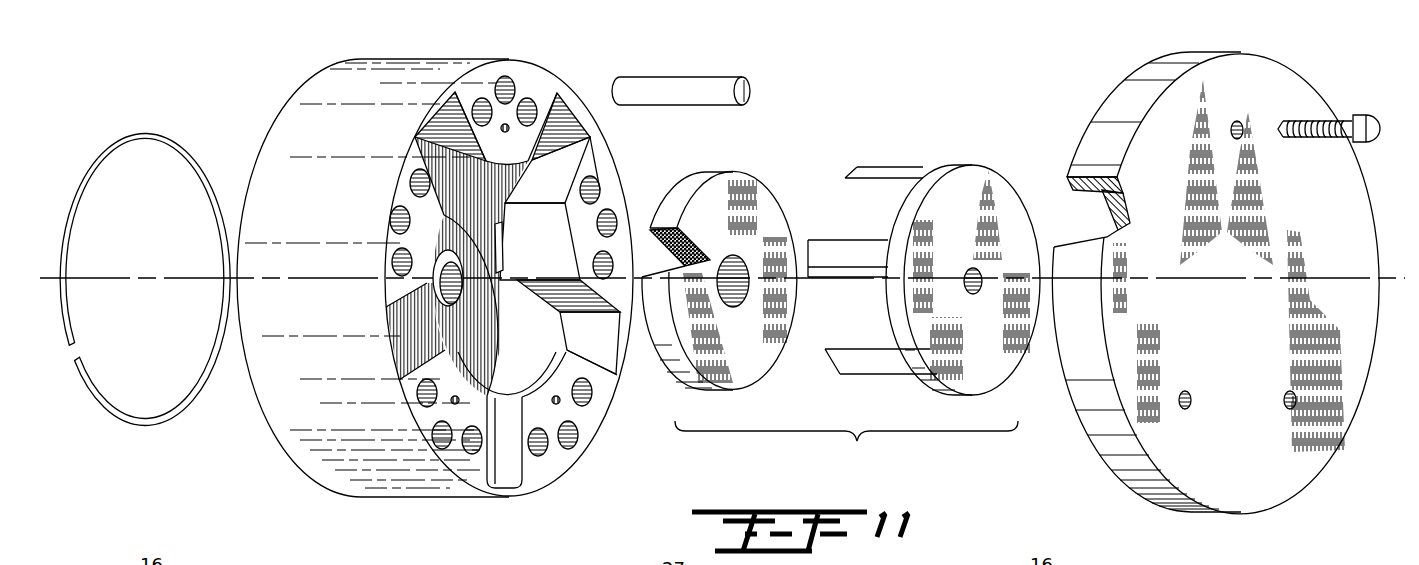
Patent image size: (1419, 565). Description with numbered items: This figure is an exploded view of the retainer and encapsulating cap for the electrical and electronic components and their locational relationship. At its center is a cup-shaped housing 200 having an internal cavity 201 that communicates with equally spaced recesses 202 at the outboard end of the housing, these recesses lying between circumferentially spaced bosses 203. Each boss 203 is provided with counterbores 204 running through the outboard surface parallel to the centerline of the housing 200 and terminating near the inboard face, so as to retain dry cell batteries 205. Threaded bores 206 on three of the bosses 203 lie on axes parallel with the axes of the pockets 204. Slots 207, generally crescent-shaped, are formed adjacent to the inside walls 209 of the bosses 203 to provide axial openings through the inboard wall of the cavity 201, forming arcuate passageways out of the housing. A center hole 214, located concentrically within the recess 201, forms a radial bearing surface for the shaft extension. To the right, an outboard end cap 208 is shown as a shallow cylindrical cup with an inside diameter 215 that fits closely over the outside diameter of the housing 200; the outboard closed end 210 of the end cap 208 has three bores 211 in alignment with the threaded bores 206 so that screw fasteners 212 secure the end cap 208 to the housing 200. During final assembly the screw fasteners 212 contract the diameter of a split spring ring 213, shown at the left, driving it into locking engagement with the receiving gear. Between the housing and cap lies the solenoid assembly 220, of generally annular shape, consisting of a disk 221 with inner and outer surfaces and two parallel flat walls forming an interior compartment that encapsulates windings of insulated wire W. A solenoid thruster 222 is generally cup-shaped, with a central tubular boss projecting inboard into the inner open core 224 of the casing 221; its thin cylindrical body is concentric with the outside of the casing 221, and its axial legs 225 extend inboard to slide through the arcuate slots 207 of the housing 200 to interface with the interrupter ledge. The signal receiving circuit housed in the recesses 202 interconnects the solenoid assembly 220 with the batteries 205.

The cup-shaped housing 200 is at (292, 465).
The internal cavity 201 is at (413, 333).
The recesses 202 is at (568, 158).
The bosses 203 is at (605, 188).
The counterbores 204 is at (511, 85).
The dry cell batteries 205 is at (748, 90).
The threaded bores 206 is at (510, 129).
The slots 207 is at (496, 243).
The outboard end cap 208 is at (1230, 282).
The inside walls 209 is at (553, 232).
The outboard closed end 210 is at (1342, 186).
The bores 211 is at (1233, 122).
The screw fasteners 212 is at (1318, 117).
The split spring ring 213 is at (152, 136).
The center hole 214 is at (440, 296).
The inside diameter 215 is at (1092, 191).
The solenoid assembly 220 is at (846, 444).
The disk 221 is at (715, 264).
The solenoid thruster 222 is at (960, 167).
The inner open core 224 is at (743, 293).
The axial legs 225 is at (878, 165).
The insulated wire W is at (676, 250).